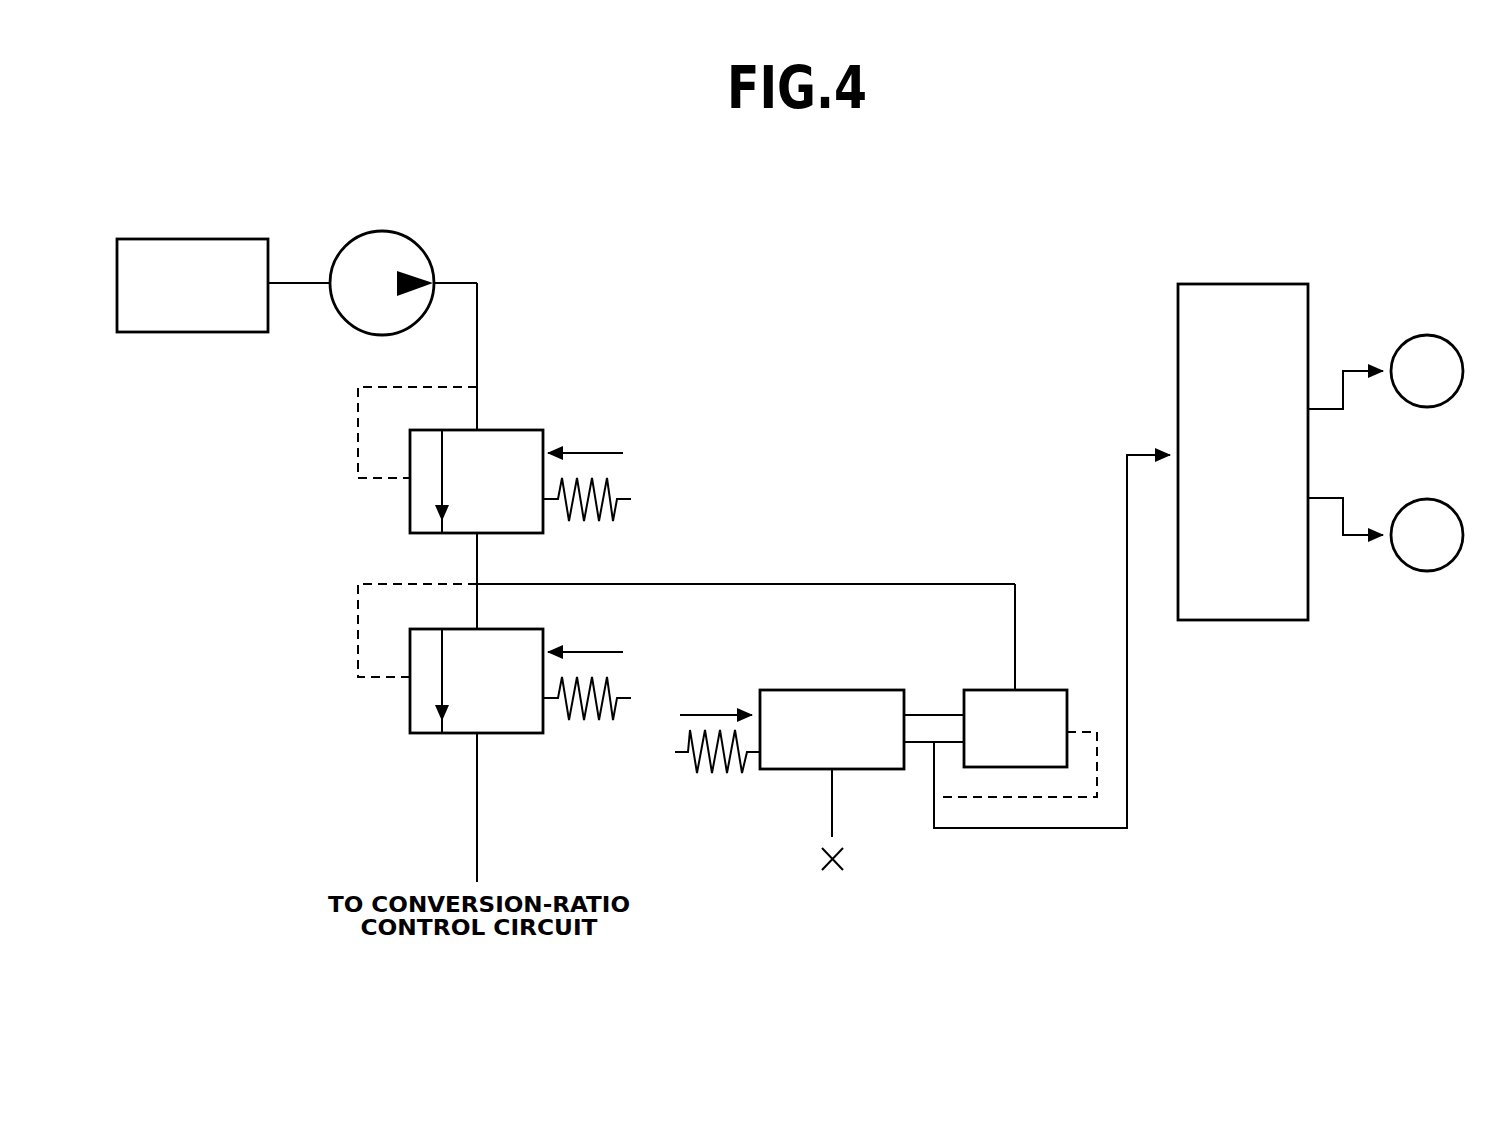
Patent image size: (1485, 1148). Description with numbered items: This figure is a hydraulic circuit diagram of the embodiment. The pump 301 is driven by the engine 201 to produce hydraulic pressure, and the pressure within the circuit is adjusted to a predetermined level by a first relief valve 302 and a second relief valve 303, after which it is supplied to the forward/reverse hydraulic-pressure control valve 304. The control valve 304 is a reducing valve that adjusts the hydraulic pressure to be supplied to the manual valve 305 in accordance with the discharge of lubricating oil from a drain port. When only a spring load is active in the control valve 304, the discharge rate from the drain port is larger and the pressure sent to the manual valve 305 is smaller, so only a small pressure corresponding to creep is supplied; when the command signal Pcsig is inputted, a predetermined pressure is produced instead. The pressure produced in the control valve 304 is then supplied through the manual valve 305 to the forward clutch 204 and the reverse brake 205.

The engine 201 is at (181, 239).
The pump 301 is at (378, 231).
The first relief valve 302 is at (520, 420).
The second relief valve 303 is at (424, 745).
The forward/reverse hydraulic-pressure control valve 304 is at (852, 680).
The manual valve 305 is at (1230, 284).
The forward clutch 204 is at (1428, 335).
The reverse brake 205 is at (1428, 571).